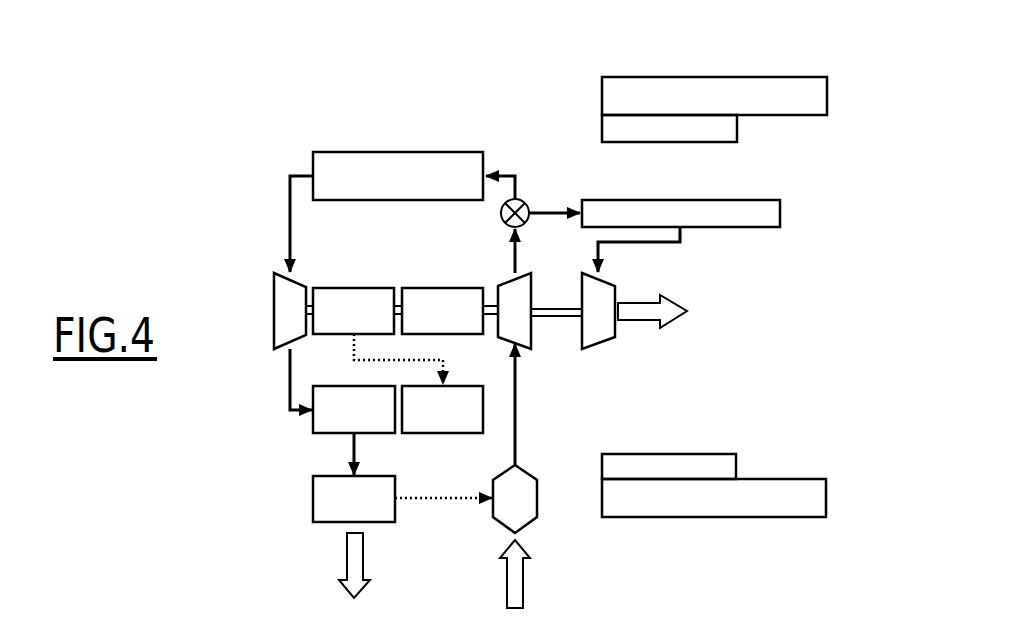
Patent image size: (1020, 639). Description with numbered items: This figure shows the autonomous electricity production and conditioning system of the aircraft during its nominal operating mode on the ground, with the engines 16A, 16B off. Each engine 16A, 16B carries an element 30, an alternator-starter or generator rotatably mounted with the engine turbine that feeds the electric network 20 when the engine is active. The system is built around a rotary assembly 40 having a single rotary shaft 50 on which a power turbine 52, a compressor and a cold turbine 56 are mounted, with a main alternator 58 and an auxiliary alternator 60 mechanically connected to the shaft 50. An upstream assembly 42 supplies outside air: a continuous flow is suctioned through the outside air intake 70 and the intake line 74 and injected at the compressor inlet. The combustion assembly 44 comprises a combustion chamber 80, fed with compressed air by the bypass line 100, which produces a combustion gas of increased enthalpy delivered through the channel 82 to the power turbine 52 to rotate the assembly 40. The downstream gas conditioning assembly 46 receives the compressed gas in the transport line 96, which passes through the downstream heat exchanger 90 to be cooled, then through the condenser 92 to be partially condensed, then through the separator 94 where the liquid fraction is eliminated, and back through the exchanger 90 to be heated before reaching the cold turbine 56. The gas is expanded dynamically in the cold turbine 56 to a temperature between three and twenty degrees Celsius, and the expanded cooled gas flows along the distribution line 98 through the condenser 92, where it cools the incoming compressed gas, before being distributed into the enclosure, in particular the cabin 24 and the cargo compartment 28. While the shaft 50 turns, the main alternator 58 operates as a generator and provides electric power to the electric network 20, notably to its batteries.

The engine 16A is at (714, 76).
The engine 16B is at (752, 508).
The element 30 is at (737, 130).
The combustion chamber 80 is at (782, 212).
The combustion assembly 44 is at (791, 225).
The downstream gas conditioning assembly 46 is at (437, 125).
The downstream heat exchanger 90 is at (327, 170).
The condenser 92 is at (327, 170).
The separator 94 is at (313, 160).
The transport line 96 is at (509, 173).
The compressed air bypass line 100 is at (548, 208).
The channel 82 is at (665, 242).
The cold turbine 56 is at (272, 292).
The main alternator 58 is at (326, 286).
The auxiliary alternator 60 is at (421, 286).
The rotary shaft 50 is at (552, 316).
The power turbine 52 is at (598, 334).
The rotary assembly 40 is at (696, 318).
The expanded cold gas distribution line 98 is at (288, 375).
The cabin 24 is at (312, 425).
The electric network 20 is at (437, 435).
The cargo compartment 28 is at (312, 495).
The outside air intake 70 is at (526, 535).
The outside upstream air intake line 74 is at (517, 414).
The upstream assembly 42 is at (488, 522).